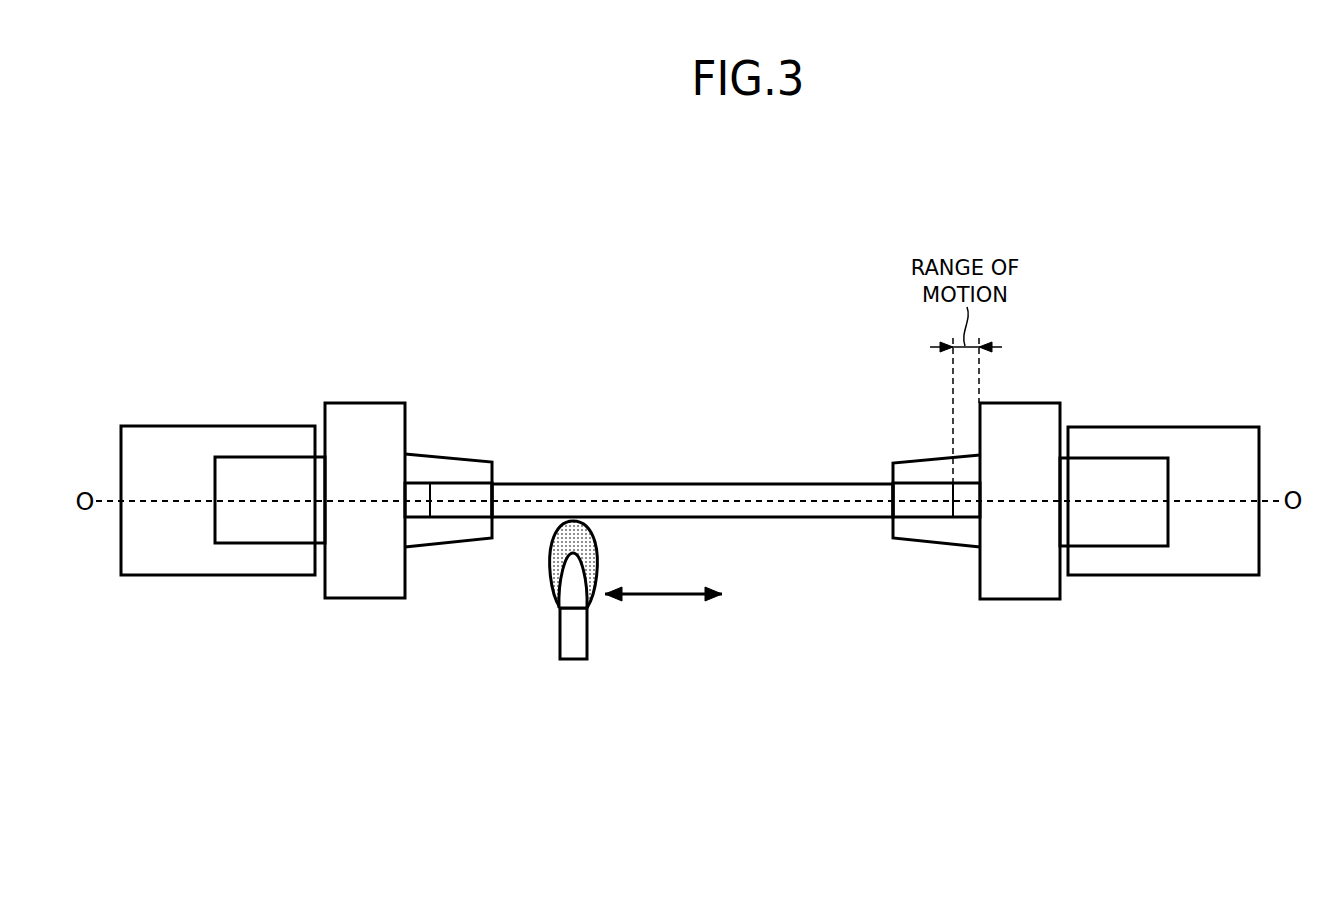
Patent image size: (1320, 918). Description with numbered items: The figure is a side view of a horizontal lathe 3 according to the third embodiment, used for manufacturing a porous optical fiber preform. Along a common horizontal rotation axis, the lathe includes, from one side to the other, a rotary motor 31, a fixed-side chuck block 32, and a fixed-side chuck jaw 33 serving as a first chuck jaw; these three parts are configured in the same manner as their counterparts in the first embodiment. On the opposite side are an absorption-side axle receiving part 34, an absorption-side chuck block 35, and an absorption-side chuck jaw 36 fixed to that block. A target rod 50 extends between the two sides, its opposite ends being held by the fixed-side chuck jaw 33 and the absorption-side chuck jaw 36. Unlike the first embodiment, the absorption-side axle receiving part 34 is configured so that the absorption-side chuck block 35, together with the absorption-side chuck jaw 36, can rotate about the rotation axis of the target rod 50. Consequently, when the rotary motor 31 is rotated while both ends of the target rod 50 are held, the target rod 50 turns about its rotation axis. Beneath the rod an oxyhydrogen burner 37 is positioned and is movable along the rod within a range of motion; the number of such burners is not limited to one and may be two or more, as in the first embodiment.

The horizontal lathe 3 is at (688, 388).
The rotary motor 31 is at (167, 442).
The fixed-side chuck block 32 is at (363, 418).
The fixed-side chuck jaw 33 is at (437, 473).
The absorption-side axle receiving part 34 is at (1242, 452).
The absorption-side chuck block 35 is at (1018, 418).
The absorption-side chuck jaw 36 is at (919, 473).
The oxyhydrogen burner 37 is at (572, 643).
The target rod 50 is at (740, 478).